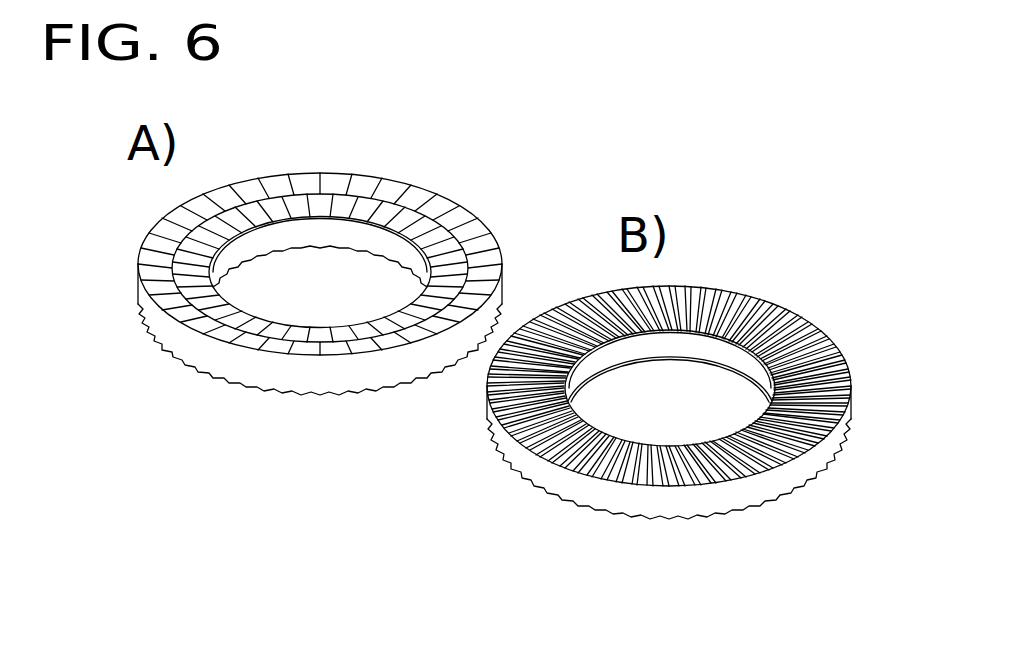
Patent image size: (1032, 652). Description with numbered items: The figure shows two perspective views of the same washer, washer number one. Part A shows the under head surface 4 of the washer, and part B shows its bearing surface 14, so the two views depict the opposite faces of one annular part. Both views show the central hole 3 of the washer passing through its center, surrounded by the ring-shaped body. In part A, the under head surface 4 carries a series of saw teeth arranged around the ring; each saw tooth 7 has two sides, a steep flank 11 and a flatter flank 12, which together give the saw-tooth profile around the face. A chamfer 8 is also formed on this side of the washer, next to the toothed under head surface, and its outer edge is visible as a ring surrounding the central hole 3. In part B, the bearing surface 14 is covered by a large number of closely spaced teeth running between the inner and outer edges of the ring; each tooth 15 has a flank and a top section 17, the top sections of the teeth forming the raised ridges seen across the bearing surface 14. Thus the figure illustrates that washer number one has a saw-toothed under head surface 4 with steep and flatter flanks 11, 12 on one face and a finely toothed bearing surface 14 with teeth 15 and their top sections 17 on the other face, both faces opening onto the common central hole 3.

The central hole of the washer 3 is at (358, 283).
The under head surface 4 is at (320, 286).
The saw tooth 7 is at (300, 352).
The chamfer 8 is at (272, 215).
The steep flank of saw tooth 11 is at (262, 347).
The flatter flank of saw tooth 12 is at (270, 352).
The bearing surface 14 is at (669, 374).
The tooth 15 is at (637, 482).
The top section of tooth 17 is at (617, 480).